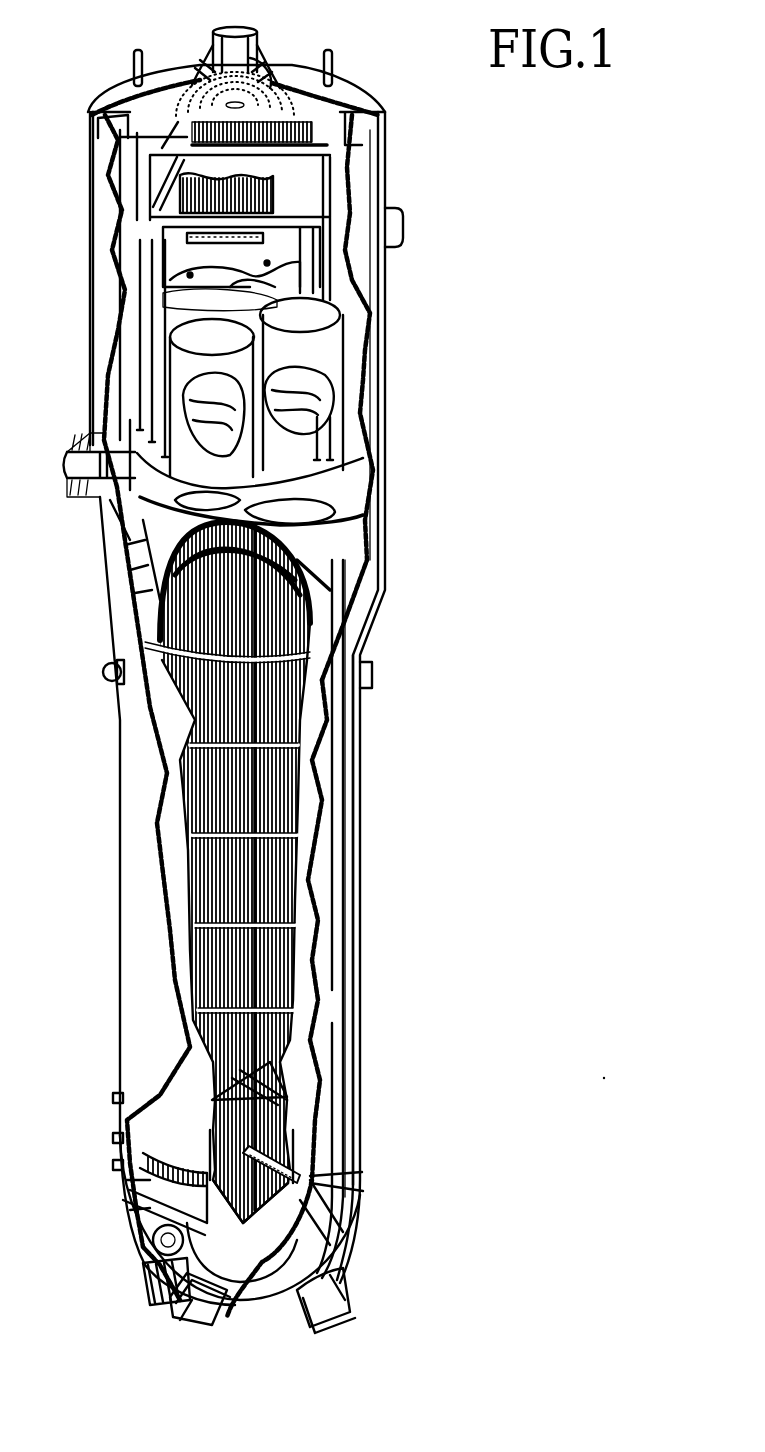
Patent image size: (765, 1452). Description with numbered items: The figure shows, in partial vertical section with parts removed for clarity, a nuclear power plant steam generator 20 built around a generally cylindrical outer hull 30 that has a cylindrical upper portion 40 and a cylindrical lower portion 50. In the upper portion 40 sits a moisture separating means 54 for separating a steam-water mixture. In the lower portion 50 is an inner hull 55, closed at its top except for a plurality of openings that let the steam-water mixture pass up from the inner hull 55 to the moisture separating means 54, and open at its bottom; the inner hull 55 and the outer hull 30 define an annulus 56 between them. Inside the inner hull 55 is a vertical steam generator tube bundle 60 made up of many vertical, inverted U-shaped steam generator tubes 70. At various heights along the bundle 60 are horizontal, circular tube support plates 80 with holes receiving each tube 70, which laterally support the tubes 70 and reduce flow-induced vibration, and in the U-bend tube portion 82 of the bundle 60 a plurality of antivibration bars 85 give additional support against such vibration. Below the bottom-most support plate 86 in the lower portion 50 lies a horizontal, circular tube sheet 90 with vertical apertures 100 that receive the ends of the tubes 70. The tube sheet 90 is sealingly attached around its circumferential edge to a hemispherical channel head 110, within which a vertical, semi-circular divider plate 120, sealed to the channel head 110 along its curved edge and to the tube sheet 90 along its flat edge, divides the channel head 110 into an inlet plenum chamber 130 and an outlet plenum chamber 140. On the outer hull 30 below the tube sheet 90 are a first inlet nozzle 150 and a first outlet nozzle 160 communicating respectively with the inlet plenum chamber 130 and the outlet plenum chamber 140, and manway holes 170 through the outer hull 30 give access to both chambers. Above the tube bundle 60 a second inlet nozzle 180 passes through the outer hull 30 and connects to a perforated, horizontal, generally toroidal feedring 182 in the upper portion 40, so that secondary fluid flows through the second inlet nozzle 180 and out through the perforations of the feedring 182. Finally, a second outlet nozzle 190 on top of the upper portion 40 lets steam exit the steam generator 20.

The nuclear power plant steam generator 20 is at (426, 452).
The outer hull 30 is at (388, 274).
The upper portion 40 is at (100, 213).
The lower portion 50 is at (130, 962).
The moisture separating means 54 is at (173, 162).
The inner hull 55 is at (303, 740).
The annulus 56 is at (310, 783).
The steam generator tube bundle 60 is at (303, 980).
The steam generator tubes 70 is at (300, 857).
The tube support plates 80 is at (210, 757).
The U-bend tube portion 82 is at (150, 580).
The antivibration bars 85 is at (317, 623).
The bottom-most support plate 86 is at (280, 1093).
The tube sheet 90 is at (150, 1190).
The vertical apertures 100 is at (307, 1197).
The channel head 110 is at (350, 1222).
The divider plate 120 is at (243, 1257).
The inlet plenum chamber 130 is at (317, 1237).
The outlet plenum chamber 140 is at (150, 1220).
The first inlet nozzle 150 is at (193, 1310).
The first outlet nozzle 160 is at (323, 1287).
The manway holes 170 is at (147, 1257).
The second inlet nozzle 180 is at (88, 493).
The feedring 182 is at (110, 543).
The second outlet nozzle 190 is at (252, 33).